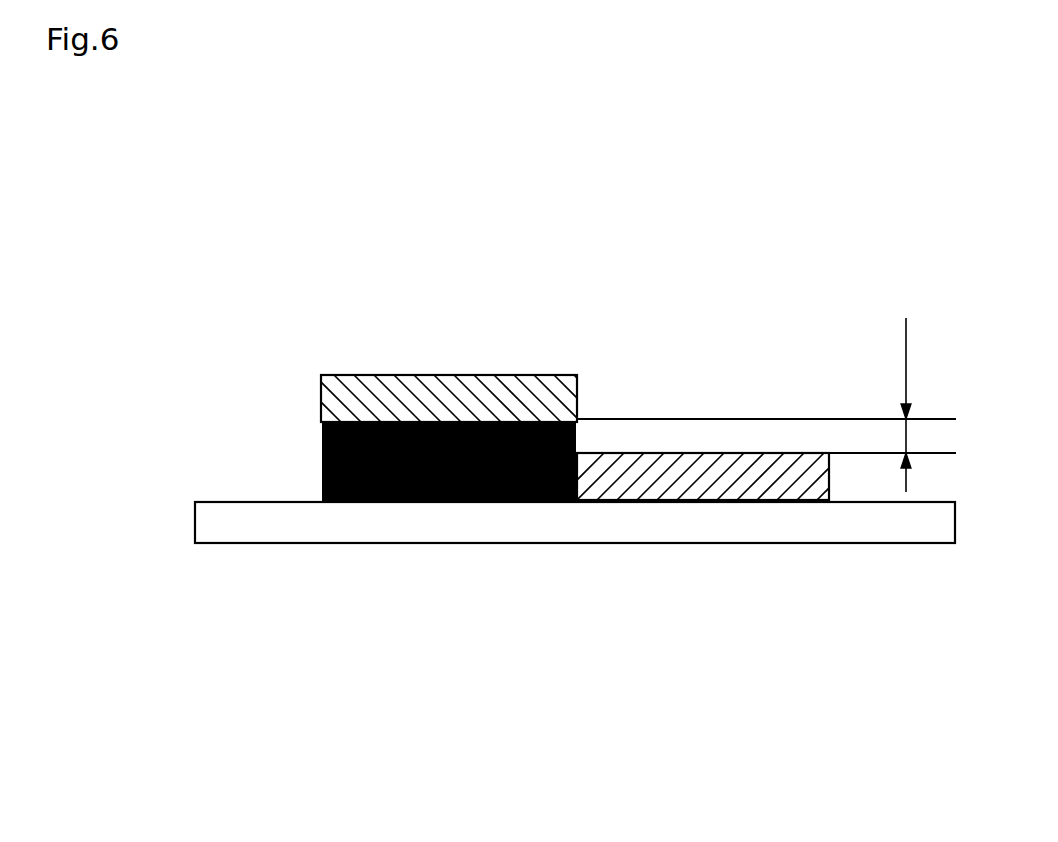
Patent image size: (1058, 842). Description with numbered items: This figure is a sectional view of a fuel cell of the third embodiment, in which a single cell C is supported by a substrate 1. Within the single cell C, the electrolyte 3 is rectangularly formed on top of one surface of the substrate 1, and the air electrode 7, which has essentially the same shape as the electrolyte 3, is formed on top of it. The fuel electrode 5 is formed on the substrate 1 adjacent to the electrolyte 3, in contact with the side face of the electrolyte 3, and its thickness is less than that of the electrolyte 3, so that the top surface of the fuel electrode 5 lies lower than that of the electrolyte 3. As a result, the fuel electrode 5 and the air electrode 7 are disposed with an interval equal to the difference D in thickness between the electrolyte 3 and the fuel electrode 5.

The substrate 1 is at (907, 530).
The electrolyte 3 is at (323, 453).
The fuel electrode 5 is at (712, 468).
The air electrode 7 is at (483, 375).
The difference in thickness D is at (766, 405).
The single cell C is at (614, 326).